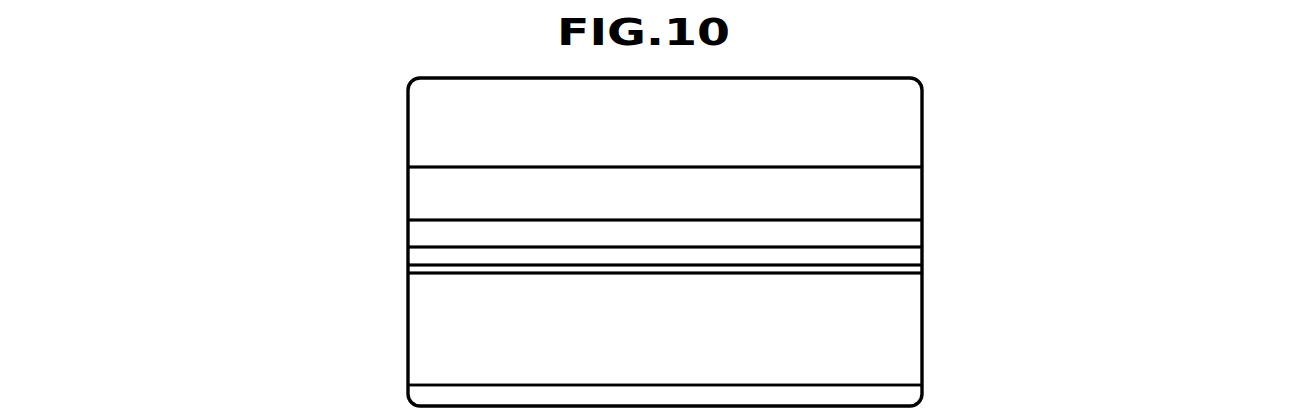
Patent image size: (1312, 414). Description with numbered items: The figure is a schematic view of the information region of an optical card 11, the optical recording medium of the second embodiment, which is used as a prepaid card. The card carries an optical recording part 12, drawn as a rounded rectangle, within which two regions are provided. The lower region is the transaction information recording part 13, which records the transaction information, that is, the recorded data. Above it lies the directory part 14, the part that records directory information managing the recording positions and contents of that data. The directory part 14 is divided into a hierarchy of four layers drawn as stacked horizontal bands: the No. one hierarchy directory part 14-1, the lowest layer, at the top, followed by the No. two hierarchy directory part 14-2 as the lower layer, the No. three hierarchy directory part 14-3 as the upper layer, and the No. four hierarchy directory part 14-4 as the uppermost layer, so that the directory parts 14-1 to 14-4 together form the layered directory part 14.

The optical card 11 is at (891, 77).
The optical recording part 12 is at (400, 383).
The transaction information recording part 13 is at (928, 282).
The directory part 14 is at (928, 167).
The No. 1 hierarchy directory part 14-1 is at (665, 193).
The No. 2 hierarchy directory part 14-2 is at (416, 231).
The No. 3 hierarchy directory part 14-3 is at (912, 259).
The No. 4 hierarchy directory part 14-4 is at (888, 271).